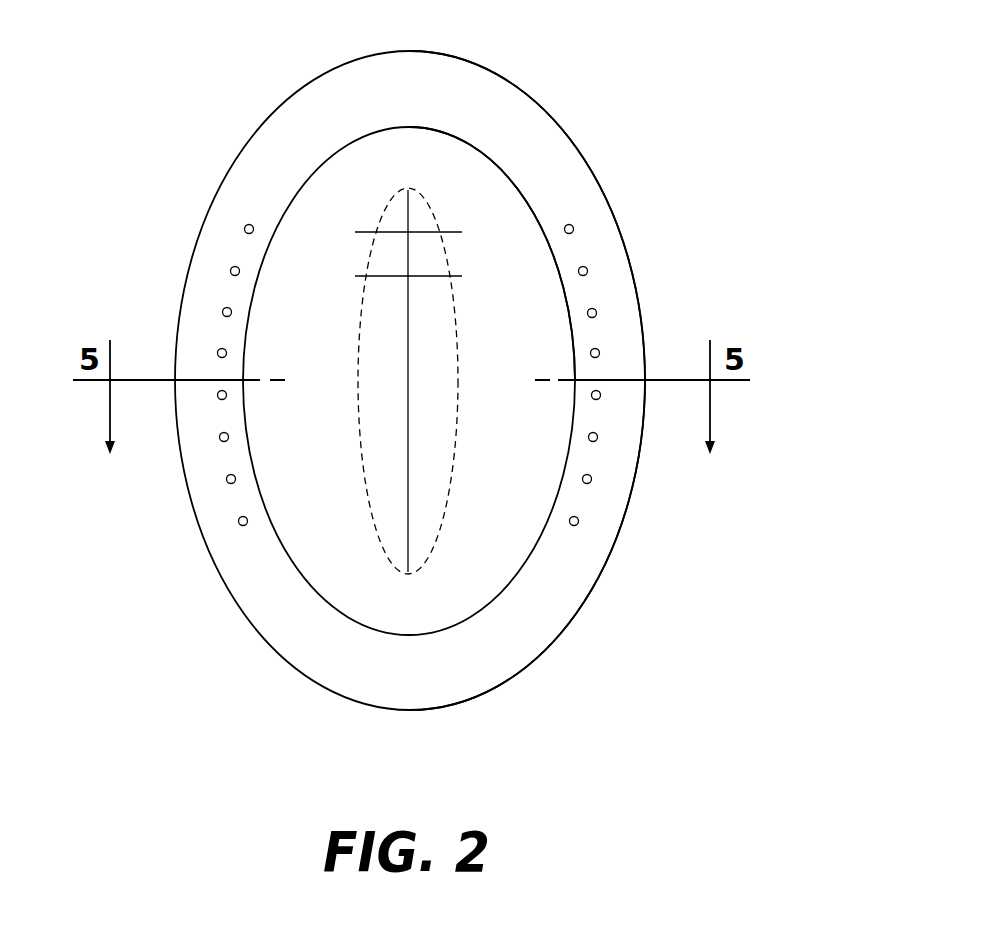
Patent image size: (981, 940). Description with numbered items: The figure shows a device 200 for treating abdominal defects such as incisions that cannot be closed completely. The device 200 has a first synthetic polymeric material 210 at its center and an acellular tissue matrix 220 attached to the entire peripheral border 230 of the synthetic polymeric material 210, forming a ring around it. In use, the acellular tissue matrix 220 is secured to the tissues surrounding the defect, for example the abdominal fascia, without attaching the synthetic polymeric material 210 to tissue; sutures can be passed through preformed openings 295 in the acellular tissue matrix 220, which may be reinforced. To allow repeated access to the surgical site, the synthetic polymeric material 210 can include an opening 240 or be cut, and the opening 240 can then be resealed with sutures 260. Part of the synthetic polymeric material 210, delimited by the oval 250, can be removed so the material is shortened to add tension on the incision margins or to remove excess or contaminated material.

The device 200 is at (682, 123).
The first synthetic polymeric material 210 is at (501, 502).
The acellular tissue matrix 220 is at (533, 627).
The peripheral border 230 is at (291, 556).
The opening 240 is at (431, 343).
The oval 250 is at (432, 210).
The sutures 260 is at (462, 276).
The preformed openings 295 is at (217, 353).